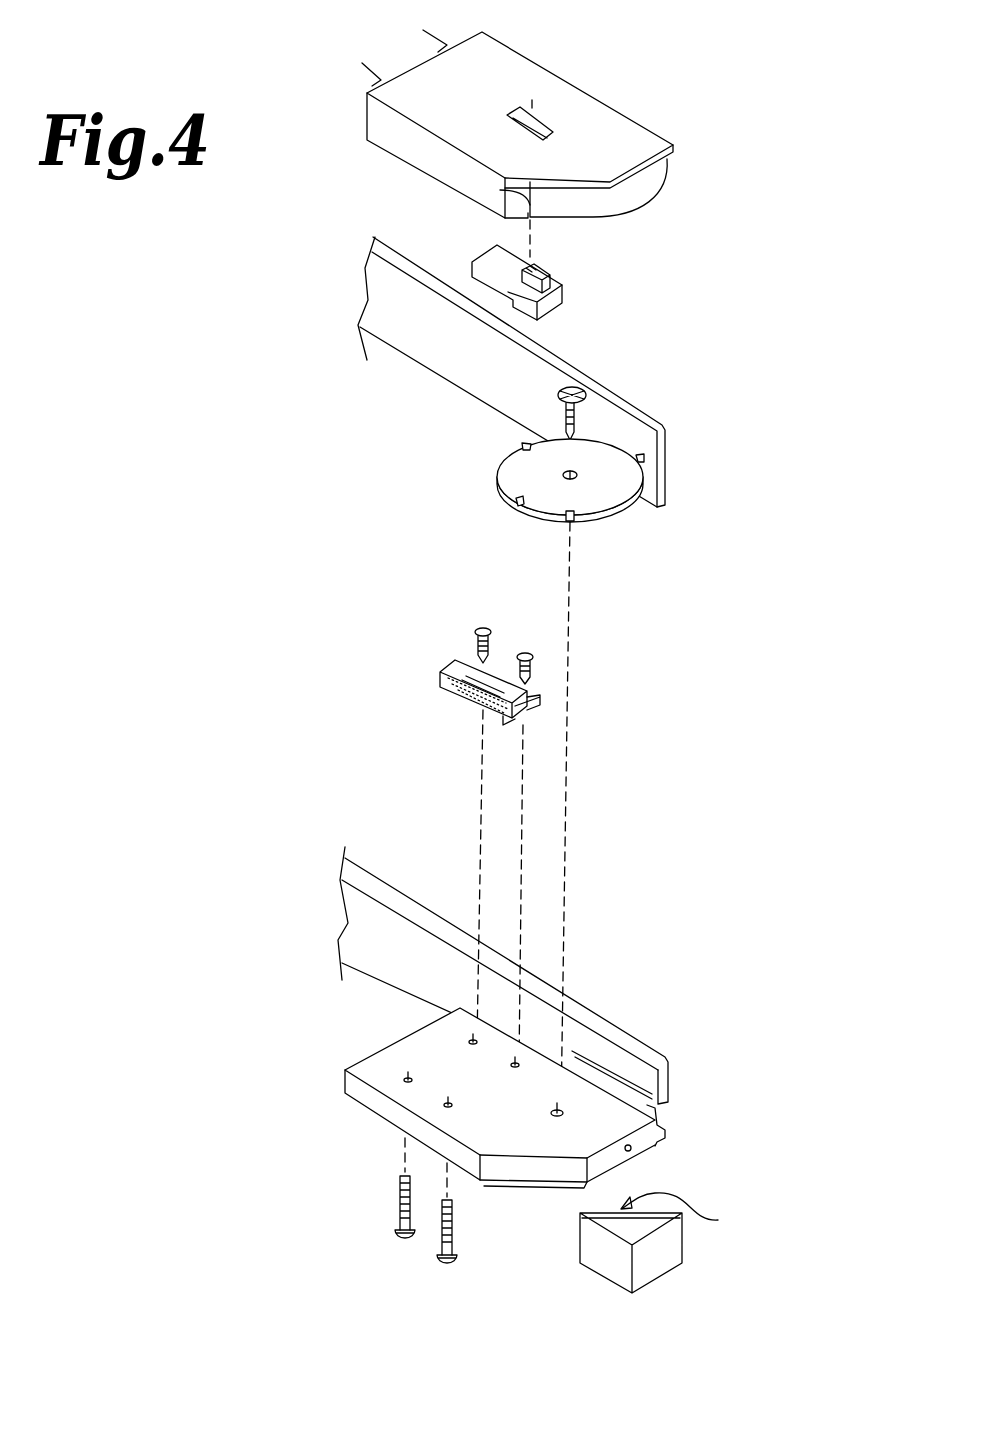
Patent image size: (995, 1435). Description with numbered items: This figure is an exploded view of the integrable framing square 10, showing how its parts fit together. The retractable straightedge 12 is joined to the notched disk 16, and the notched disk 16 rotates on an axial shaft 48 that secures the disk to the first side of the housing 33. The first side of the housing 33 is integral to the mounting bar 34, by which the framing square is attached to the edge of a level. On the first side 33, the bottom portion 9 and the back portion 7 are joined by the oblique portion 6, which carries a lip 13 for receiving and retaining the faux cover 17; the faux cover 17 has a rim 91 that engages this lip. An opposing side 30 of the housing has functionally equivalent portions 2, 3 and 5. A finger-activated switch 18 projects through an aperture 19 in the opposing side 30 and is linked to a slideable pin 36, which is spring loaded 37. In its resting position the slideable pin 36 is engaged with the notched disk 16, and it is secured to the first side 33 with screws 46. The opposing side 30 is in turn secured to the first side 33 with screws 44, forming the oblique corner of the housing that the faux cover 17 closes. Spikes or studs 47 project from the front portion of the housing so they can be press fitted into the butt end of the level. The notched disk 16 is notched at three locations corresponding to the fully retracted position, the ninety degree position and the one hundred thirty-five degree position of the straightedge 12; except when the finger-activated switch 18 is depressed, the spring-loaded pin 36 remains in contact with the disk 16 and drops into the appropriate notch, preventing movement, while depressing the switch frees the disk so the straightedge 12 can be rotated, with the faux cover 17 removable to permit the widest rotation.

The integrable framing square 10 is at (662, 100).
The portion of opposing side 2 is at (387, 128).
The opposing side 30 is at (533, 70).
The portion of opposing side 3 is at (647, 182).
The portion of opposing side 5 is at (500, 201).
The aperture 19 is at (534, 127).
The spikes or studs 47 is at (362, 63).
The finger-activated switch 18 is at (563, 292).
The retractable straightedge 12 is at (665, 438).
The axial shaft 48 is at (558, 393).
The notched disk 16 is at (617, 513).
The screws 46 is at (517, 657).
The slideable pin 36 is at (438, 673).
The spring loading 37 is at (460, 700).
The mounting bar 34 is at (662, 1083).
The bottom portion 9 is at (360, 1090).
The first side of the housing 33 is at (425, 1047).
The oblique portion 6 is at (567, 1170).
The lip 13 is at (520, 1187).
The back portion 7 is at (632, 1150).
The screws 44 is at (438, 1232).
The rim 91 is at (693, 1218).
The faux cover 17 is at (653, 1267).